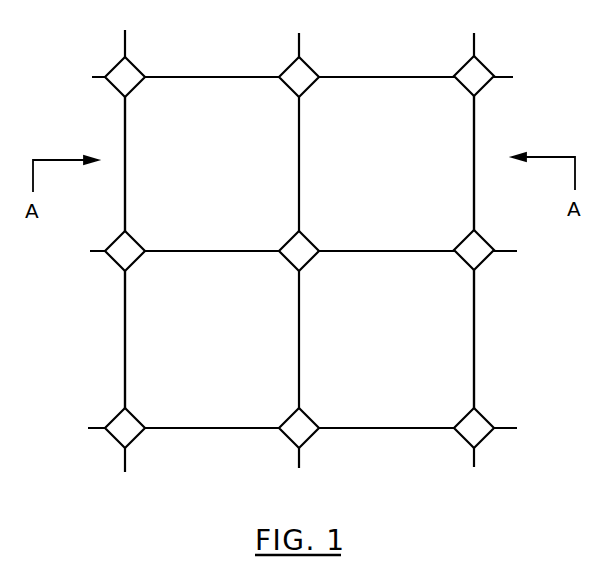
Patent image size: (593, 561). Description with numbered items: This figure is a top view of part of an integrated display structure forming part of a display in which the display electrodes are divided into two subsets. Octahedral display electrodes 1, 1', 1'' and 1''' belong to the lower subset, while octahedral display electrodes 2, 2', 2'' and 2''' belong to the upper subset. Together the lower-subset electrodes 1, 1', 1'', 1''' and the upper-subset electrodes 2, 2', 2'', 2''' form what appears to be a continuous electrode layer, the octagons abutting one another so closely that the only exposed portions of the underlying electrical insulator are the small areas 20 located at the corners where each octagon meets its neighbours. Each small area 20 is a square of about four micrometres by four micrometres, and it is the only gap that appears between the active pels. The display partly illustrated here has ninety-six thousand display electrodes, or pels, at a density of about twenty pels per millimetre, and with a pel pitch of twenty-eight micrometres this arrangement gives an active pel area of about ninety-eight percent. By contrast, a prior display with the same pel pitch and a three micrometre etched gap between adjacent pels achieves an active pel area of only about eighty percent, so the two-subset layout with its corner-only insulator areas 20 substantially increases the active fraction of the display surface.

The octahedral display electrode of the lower subset 1 is at (109, 164).
The octahedral display electrode of the upper subset 2 is at (493, 163).
The octahedral display electrode of the lower subset 1' is at (502, 339).
The octahedral display electrode of the upper subset 2' is at (99, 339).
The octahedral display electrode of the lower subset 1'' is at (386, 42).
The octahedral display electrode of the upper subset 2'' is at (212, 42).
The octahedral display electrode of the lower subset 1''' is at (212, 465).
The octahedral display electrode of the upper subset 2''' is at (386, 465).
The small area of electrical insulator 20 is at (485, 64).